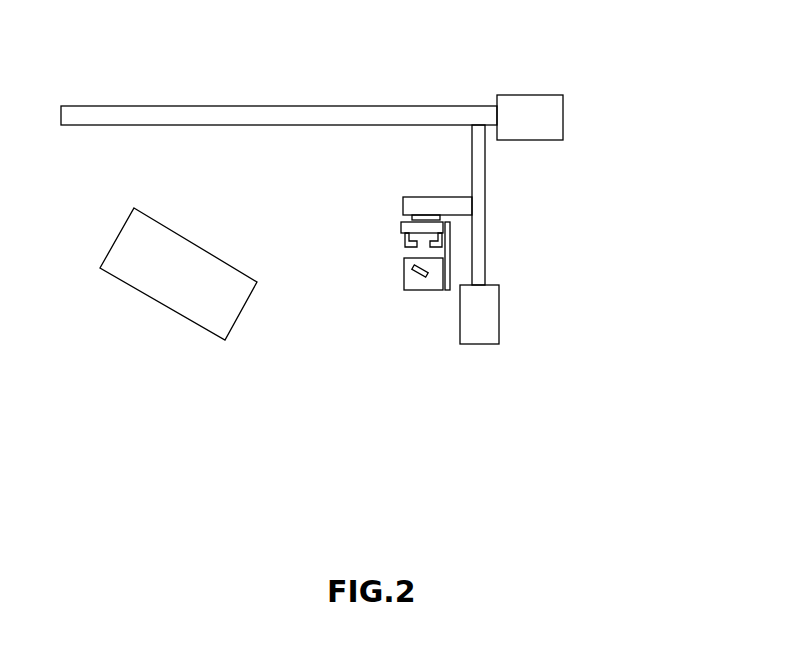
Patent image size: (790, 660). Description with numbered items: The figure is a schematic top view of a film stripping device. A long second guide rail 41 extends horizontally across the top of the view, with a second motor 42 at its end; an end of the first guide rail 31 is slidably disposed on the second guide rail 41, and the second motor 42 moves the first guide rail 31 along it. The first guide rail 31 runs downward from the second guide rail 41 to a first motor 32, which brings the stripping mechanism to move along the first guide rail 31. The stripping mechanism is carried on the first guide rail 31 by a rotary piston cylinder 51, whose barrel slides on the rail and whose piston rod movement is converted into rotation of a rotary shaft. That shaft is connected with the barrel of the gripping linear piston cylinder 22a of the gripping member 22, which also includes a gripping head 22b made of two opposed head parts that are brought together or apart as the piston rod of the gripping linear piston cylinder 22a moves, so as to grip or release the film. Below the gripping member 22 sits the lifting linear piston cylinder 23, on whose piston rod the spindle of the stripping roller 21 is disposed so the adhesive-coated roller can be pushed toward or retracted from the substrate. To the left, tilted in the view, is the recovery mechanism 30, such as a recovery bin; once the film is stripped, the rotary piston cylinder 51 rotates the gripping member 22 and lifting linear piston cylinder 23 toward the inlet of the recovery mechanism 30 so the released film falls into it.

The second guide rail 41 is at (385, 107).
The second motor 42 is at (547, 120).
The first guide rail 31 is at (485, 205).
The first motor 32 is at (493, 321).
The rotary piston cylinder 51 is at (403, 205).
The gripping member 22 is at (373, 253).
The gripping linear piston cylinder 22a is at (401, 227).
The gripping head 22b is at (398, 247).
The lifting linear piston cylinder 23 is at (405, 270).
The stripping roller 21 is at (418, 278).
The recovery mechanism 30 is at (233, 323).